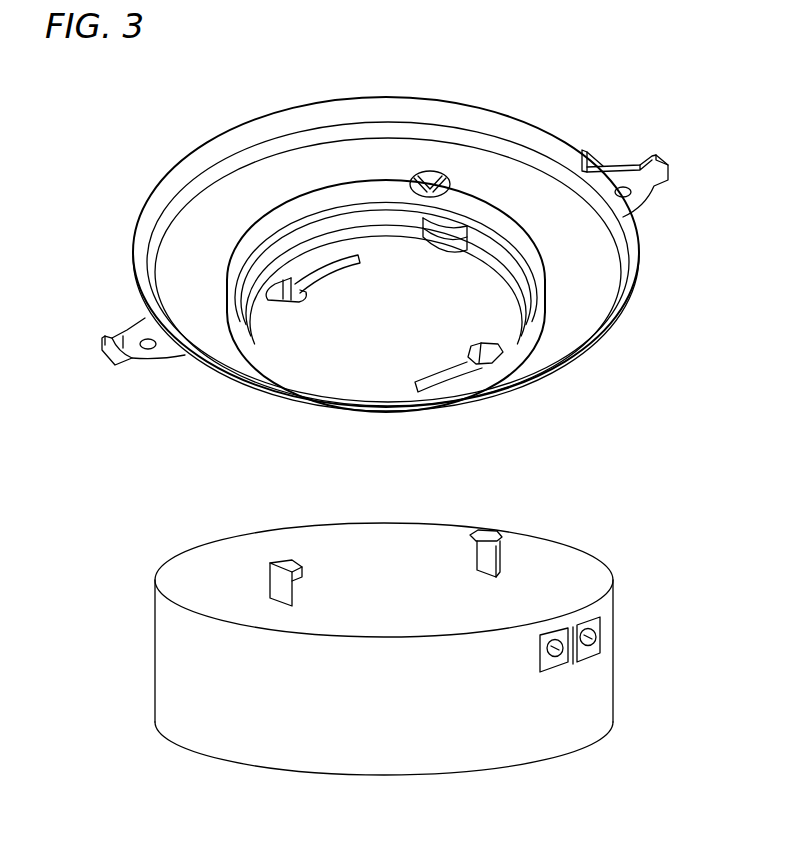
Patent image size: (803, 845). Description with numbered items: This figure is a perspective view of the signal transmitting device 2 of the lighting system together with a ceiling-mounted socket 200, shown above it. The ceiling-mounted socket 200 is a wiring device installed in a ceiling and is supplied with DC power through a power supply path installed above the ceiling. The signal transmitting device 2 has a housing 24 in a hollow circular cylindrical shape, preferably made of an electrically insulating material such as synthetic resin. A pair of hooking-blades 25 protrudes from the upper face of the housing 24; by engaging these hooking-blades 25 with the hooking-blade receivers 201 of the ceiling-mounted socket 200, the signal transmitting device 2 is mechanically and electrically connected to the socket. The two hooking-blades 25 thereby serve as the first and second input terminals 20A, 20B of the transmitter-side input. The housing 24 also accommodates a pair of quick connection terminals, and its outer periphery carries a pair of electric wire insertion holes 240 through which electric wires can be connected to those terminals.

The ceiling-mounted socket 200 is at (490, 122).
The hooking-blade receiver 201 is at (283, 297).
The signal transmitting device 2 is at (423, 631).
The housing 24 is at (616, 597).
The electric wire insertion hole 240 is at (591, 640).
The hooking-blade 25 is at (379, 541).
The first input terminal 20A is at (283, 563).
The second input terminal 20B is at (479, 530).